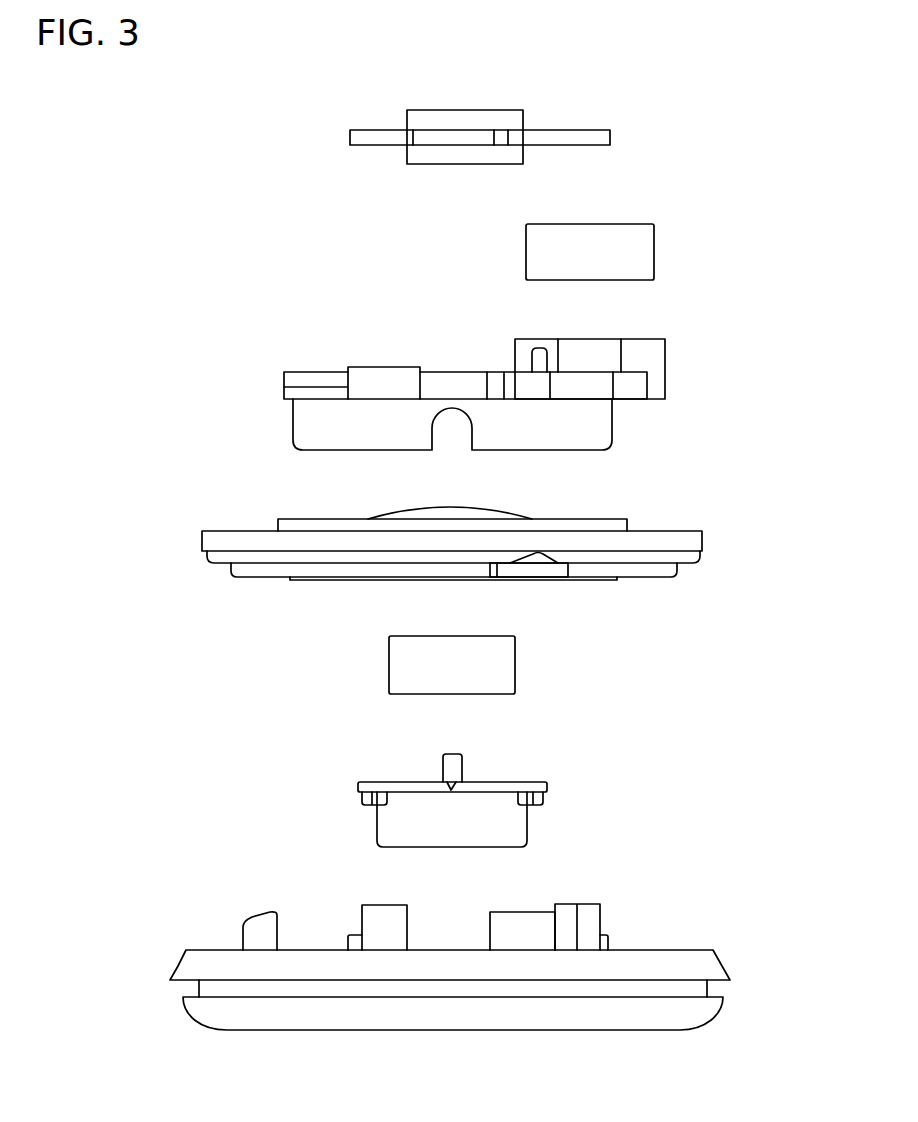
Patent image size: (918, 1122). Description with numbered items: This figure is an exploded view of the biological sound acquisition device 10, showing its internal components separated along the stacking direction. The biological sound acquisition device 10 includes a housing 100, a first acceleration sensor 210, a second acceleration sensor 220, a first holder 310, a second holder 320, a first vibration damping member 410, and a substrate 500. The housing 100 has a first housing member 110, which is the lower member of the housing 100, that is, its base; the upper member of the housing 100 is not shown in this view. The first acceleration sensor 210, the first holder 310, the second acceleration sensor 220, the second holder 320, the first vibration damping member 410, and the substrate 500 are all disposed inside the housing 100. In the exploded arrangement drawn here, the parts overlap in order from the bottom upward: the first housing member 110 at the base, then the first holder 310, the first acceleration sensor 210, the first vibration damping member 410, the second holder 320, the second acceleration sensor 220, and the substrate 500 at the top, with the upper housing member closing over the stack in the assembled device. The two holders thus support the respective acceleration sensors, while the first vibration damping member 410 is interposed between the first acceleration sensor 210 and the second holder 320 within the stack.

The biological sound acquisition device 10 is at (194, 92).
The substrate 500 is at (600, 133).
The second acceleration sensor 220 is at (640, 248).
The second holder 320 is at (653, 362).
The first vibration damping member 410 is at (678, 544).
The first acceleration sensor 210 is at (495, 664).
The first holder 310 is at (507, 825).
The first housing member 110 is at (687, 989).
The housing 100 is at (502, 973).